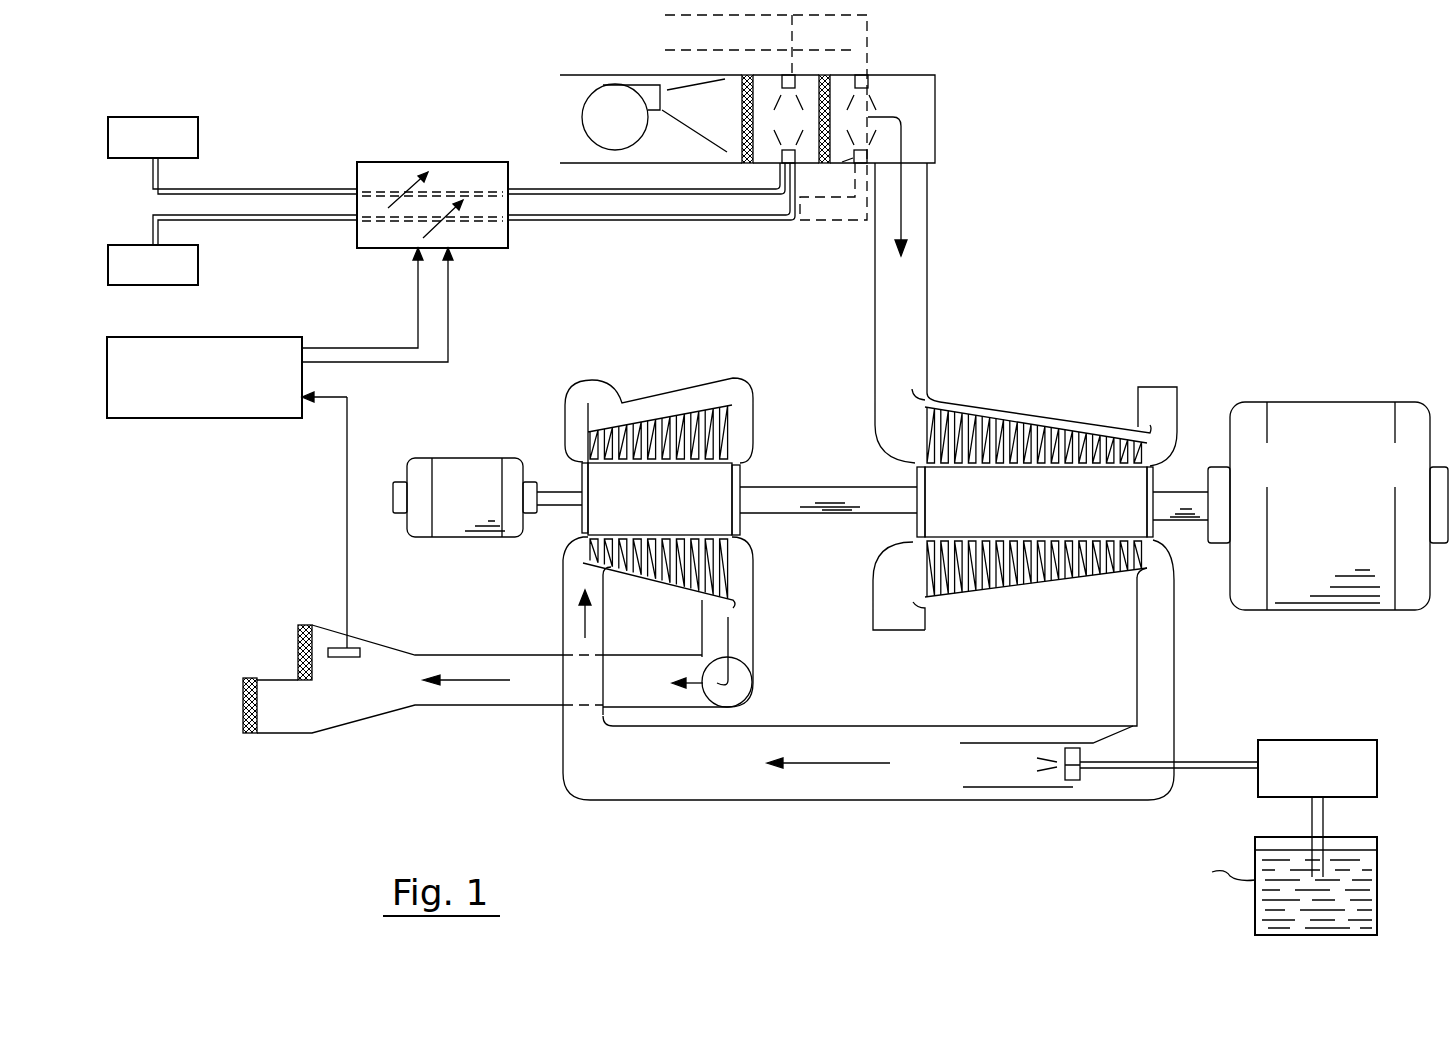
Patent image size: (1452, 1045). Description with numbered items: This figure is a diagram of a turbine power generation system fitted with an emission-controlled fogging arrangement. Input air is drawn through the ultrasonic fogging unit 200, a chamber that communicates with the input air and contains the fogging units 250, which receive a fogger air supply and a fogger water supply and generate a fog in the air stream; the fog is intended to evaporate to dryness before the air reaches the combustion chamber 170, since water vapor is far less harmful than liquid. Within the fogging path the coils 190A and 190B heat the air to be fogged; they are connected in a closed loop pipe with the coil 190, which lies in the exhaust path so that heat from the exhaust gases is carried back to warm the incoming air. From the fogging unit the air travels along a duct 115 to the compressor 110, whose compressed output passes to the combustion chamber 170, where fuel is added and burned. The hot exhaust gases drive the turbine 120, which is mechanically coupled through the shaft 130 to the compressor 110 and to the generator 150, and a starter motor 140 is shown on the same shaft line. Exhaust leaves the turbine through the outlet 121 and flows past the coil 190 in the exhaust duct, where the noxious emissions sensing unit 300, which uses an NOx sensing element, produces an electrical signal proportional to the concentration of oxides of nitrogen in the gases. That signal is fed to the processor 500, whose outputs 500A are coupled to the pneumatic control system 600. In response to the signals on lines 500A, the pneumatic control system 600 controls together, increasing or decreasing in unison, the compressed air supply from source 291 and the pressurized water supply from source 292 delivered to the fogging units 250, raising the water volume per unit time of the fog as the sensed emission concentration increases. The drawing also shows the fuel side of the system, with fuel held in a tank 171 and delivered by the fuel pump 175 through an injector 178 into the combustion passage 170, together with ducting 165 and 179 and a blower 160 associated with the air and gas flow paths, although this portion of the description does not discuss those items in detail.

The compressor 110 is at (1013, 404).
The air intake duct 115 is at (920, 231).
The turbine 120 is at (661, 386).
The turbine exhaust scroll 121 is at (746, 631).
The shaft 130 is at (812, 485).
The starter motor 140 is at (415, 540).
The generator 150 is at (1287, 402).
The blower 160 is at (578, 97).
The recirculation duct 165 is at (1175, 668).
The combustion chamber 170 is at (1000, 770).
The fuel tank 171 is at (1255, 842).
The fuel pump 175 is at (1322, 740).
The fuel injector 178 is at (1077, 786).
The return duct 179 is at (562, 753).
The coil 190 is at (243, 696).
The coil 190A is at (746, 77).
The coil 190B is at (823, 77).
The ultrasonic fogging unit 200 is at (808, 85).
The fogging units 250 is at (780, 77).
The compressed air supply source 291 is at (185, 117).
The pressurized water supply source 292 is at (198, 268).
The noxious emissions sensing unit 300 is at (360, 652).
The processor 500 is at (270, 337).
The outputs of the processor 500A is at (362, 375).
The pneumatic control system 600 is at (410, 160).